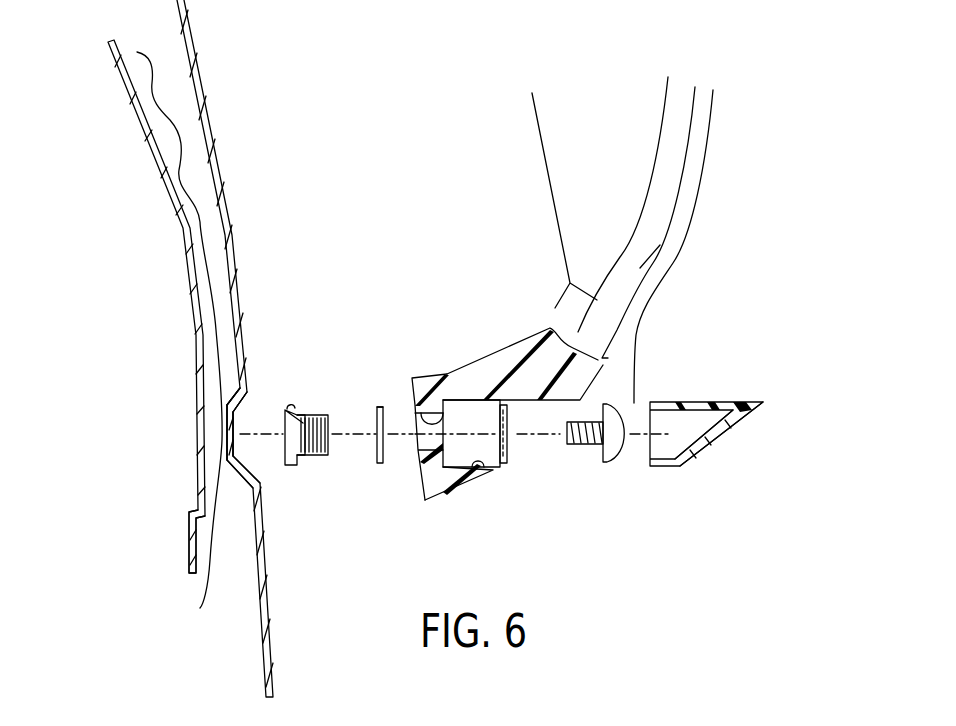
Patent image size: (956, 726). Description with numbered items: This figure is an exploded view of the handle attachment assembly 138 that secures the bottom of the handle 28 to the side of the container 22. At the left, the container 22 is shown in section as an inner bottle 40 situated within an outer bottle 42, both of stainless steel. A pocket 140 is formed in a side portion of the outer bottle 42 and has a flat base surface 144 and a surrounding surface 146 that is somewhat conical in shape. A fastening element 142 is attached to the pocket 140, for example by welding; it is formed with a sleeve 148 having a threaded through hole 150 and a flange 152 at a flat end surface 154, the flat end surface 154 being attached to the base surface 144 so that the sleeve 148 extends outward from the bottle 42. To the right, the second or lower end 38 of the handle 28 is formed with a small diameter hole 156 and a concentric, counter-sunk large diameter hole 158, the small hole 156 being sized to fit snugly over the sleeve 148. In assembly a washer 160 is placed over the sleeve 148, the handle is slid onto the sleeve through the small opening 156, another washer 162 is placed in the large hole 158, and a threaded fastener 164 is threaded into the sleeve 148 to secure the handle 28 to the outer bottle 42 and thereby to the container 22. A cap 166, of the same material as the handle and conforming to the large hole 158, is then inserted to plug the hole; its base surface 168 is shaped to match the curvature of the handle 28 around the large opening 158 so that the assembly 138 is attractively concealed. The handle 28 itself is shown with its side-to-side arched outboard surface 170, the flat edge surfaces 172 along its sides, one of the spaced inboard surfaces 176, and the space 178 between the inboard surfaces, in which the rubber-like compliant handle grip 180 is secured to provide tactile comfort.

The container 22 is at (178, 192).
The handle 28 is at (694, 240).
The second or lower end 38 is at (437, 493).
The inner bottle 40 is at (200, 452).
The outer bottle 42 is at (272, 637).
The handle attachment assembly 138 is at (385, 368).
The pocket 140 is at (221, 430).
The fastening element 142 is at (331, 415).
The flat base surface 144 is at (242, 412).
The surrounding surface 146 is at (238, 437).
The sleeve 148 is at (315, 455).
The threaded through hole 150 is at (330, 445).
The flange 152 is at (293, 405).
The flat end surface 154 is at (288, 407).
The small diameter hole 156 is at (507, 324).
The large diameter hole 158 is at (490, 470).
The washer 160 is at (378, 402).
The washer 162 is at (510, 450).
The threaded fastener 164 is at (614, 414).
The cap 166 is at (736, 403).
The base surface 168 is at (725, 436).
The outboard surface 170 is at (672, 235).
The flat edge surfaces 172 is at (640, 270).
The inboard surface 176 is at (562, 313).
The space 178 is at (650, 183).
The handle grip 180 is at (650, 130).